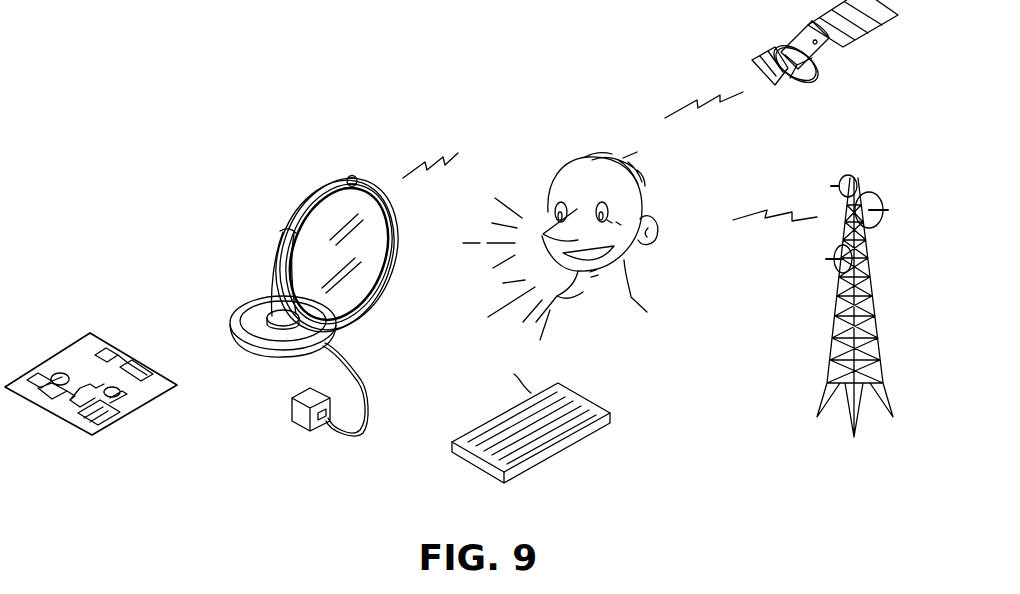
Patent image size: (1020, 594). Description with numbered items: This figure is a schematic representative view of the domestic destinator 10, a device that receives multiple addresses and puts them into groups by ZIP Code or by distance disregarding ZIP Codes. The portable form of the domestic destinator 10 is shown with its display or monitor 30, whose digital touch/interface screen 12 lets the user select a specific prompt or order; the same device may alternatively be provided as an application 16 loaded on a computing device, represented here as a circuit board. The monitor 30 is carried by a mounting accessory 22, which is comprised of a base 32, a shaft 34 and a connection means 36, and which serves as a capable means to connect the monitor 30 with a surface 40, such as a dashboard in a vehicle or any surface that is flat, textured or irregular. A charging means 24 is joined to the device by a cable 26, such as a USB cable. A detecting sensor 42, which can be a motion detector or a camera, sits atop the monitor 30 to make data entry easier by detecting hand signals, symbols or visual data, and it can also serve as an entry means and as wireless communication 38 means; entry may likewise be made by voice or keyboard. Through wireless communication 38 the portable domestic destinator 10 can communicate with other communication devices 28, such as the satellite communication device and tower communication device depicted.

The domestic destinator 10 is at (120, 115).
The digital touch/interface screen 12 is at (377, 247).
The application 16 is at (63, 360).
The mounting accessory 22 is at (235, 275).
The charging means 24 is at (296, 413).
The cable 26 is at (366, 404).
The communication devices 28 is at (865, 28).
The display or monitor 30 is at (328, 191).
The base 32 is at (233, 325).
The shaft 34 is at (283, 232).
The connection means 36 is at (292, 358).
The wireless communication 38 is at (412, 172).
The surface 40 is at (385, 355).
The detecting sensor 42 is at (355, 176).